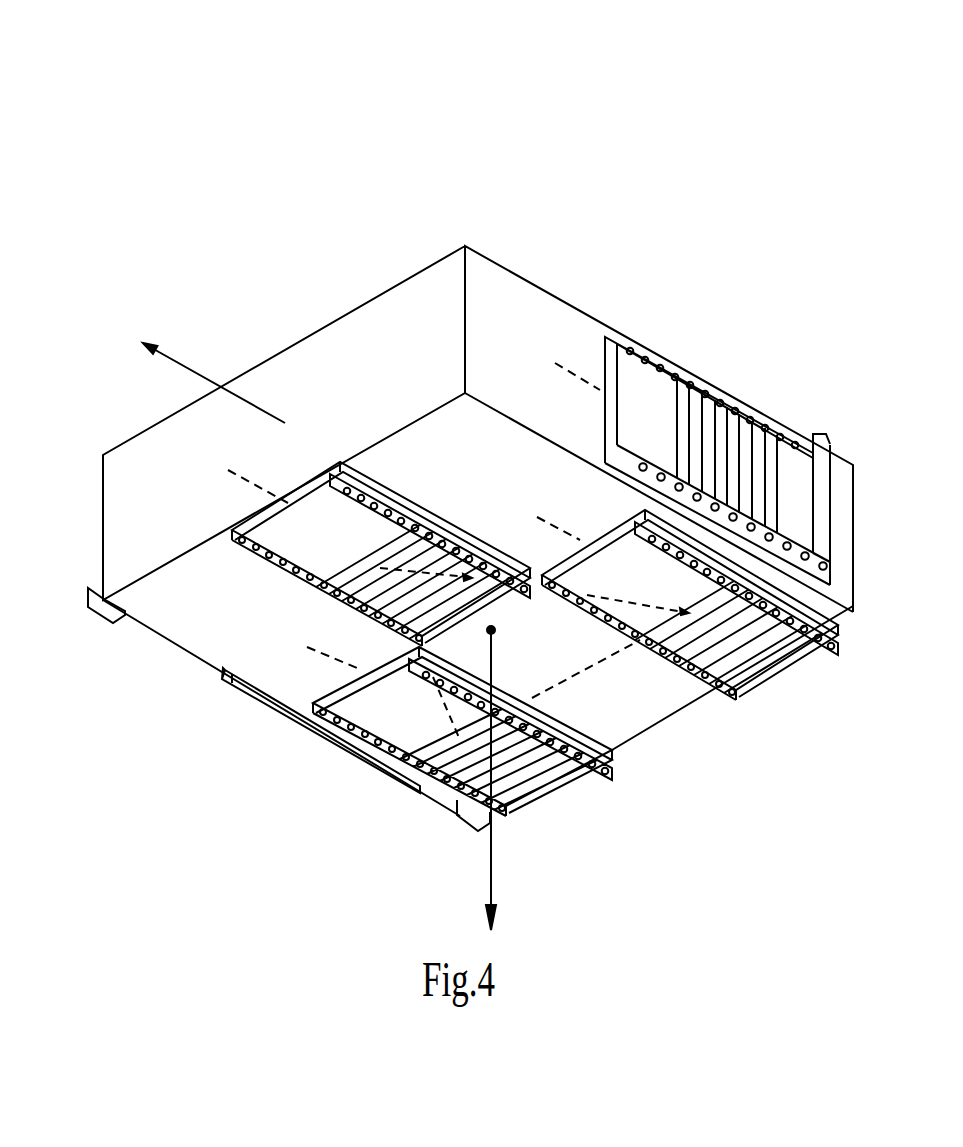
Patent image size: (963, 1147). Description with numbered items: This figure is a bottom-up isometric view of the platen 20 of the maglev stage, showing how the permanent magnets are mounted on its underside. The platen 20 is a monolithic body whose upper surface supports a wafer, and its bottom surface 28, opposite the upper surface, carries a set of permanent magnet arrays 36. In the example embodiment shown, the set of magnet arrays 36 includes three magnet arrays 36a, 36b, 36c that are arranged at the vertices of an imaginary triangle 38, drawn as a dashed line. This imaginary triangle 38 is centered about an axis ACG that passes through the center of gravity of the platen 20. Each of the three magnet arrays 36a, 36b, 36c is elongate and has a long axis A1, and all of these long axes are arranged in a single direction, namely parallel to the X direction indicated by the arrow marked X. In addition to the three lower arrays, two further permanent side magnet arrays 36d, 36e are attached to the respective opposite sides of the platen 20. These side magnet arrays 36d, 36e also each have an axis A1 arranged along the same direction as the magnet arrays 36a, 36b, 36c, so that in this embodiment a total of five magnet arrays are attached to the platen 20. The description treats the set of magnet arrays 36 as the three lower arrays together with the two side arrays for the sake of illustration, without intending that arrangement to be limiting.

The set of permanent magnet arrays 36 is at (117, 93).
The platen 20 is at (385, 300).
The bottom surface 28 is at (667, 716).
The magnet array 36a is at (556, 792).
The magnet array 36b is at (307, 532).
The magnet array 36c is at (787, 660).
The side magnet array 36d is at (630, 356).
The side magnet array 36e is at (323, 739).
The imaginary triangle 38 is at (573, 678).
The long axis A1 is at (243, 479).
The X-direction X is at (197, 369).
The center-of-gravity axis ACG is at (491, 890).